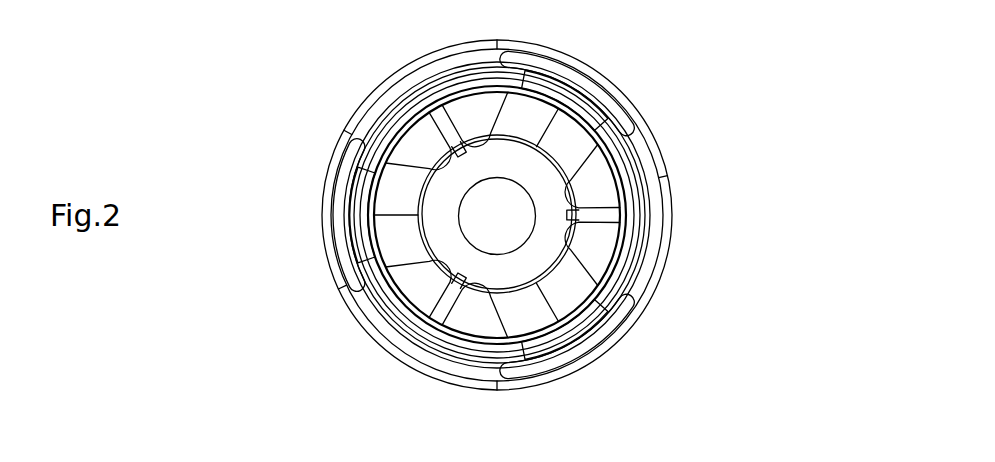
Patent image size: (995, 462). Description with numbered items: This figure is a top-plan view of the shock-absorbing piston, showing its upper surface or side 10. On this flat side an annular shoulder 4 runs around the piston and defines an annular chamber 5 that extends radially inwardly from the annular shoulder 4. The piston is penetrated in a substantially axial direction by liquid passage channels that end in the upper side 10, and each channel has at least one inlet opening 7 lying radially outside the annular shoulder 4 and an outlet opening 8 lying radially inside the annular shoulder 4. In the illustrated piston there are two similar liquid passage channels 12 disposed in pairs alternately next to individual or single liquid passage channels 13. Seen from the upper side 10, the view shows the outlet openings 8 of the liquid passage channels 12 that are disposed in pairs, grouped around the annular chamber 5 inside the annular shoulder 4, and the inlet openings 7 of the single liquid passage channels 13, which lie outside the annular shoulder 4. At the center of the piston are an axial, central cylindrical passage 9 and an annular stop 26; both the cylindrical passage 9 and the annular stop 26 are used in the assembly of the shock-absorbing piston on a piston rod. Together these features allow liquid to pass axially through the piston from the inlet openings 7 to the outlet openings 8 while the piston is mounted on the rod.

The annular shoulder 4 is at (605, 173).
The annular chamber 5 is at (402, 232).
The inlet opening 7 is at (479, 215).
The single liquid passage channel 13 is at (568, 103).
The outlet opening 8 is at (503, 215).
The liquid passage channel disposed in pairs 12 is at (515, 215).
The cylindrical passage 9 is at (500, 218).
The upper surface or side 10 is at (740, 135).
The annular stop 26 is at (530, 263).